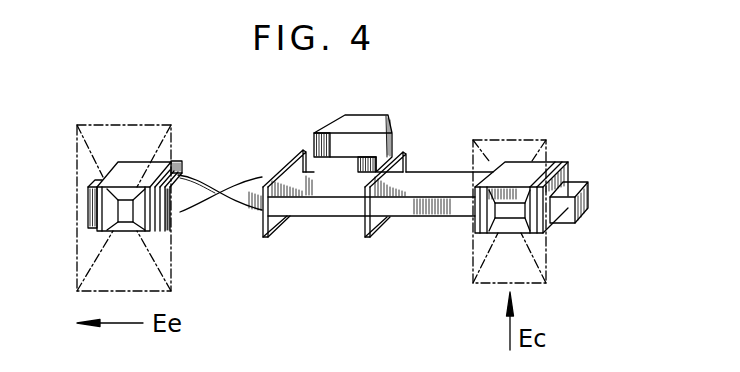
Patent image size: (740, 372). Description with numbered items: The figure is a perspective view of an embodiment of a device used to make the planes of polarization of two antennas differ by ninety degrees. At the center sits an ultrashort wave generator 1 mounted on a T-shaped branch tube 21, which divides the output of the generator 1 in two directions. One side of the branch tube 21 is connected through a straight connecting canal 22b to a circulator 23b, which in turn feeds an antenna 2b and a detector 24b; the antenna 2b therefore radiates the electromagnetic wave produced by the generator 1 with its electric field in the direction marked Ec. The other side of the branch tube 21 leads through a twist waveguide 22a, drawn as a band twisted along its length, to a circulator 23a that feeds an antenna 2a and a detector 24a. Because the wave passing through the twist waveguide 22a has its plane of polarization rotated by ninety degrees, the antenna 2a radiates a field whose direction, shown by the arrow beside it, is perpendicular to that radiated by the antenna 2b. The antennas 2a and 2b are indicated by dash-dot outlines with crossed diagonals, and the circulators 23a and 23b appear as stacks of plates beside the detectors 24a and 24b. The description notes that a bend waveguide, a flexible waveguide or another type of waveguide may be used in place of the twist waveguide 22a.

The ultrashort wave generator 1 is at (385, 116).
The antenna 2a is at (122, 125).
The antenna 2b is at (490, 140).
The T-shaped branch tube 21 is at (342, 209).
The twist waveguide 22a is at (186, 214).
The connecting canal 22b is at (400, 209).
The circulator 23a is at (179, 173).
The circulator 23b is at (569, 166).
The detector 24a is at (88, 200).
The detector 24b is at (581, 226).